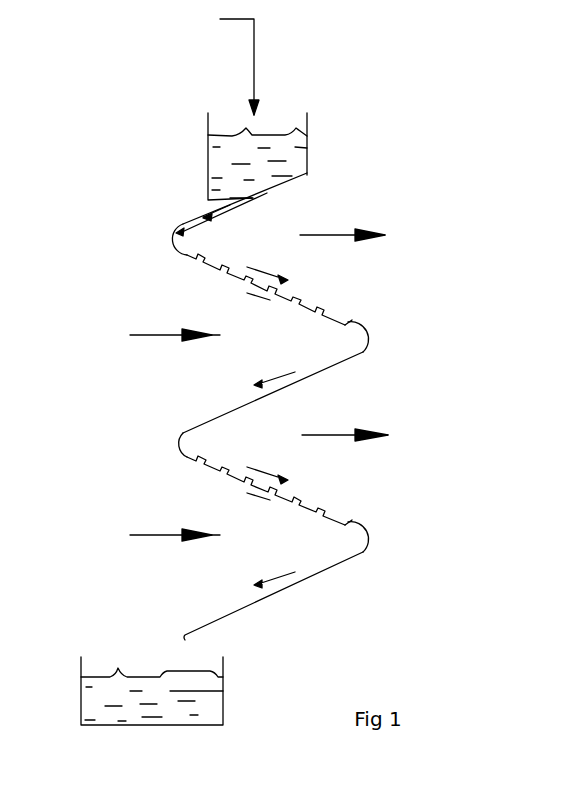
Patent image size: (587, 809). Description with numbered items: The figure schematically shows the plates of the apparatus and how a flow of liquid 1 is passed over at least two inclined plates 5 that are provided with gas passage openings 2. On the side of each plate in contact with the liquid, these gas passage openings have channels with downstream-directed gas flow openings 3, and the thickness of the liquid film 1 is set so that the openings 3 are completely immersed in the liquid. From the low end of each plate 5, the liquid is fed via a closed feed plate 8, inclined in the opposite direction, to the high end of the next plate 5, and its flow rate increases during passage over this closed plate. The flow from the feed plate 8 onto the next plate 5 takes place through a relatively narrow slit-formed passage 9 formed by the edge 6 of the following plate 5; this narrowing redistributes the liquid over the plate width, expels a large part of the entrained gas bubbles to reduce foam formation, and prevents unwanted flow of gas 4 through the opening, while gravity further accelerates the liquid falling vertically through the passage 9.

The flow of liquid 1 is at (217, 262).
The gas passage openings 2 is at (302, 297).
The downstream-directed gas flow openings 3 is at (293, 286).
The gas 4 is at (165, 542).
The inclined plates 5 is at (300, 300).
The edge of the following plate 6 is at (177, 433).
The closed feed plate 8 is at (303, 383).
The slit-formed passage 9 is at (183, 242).